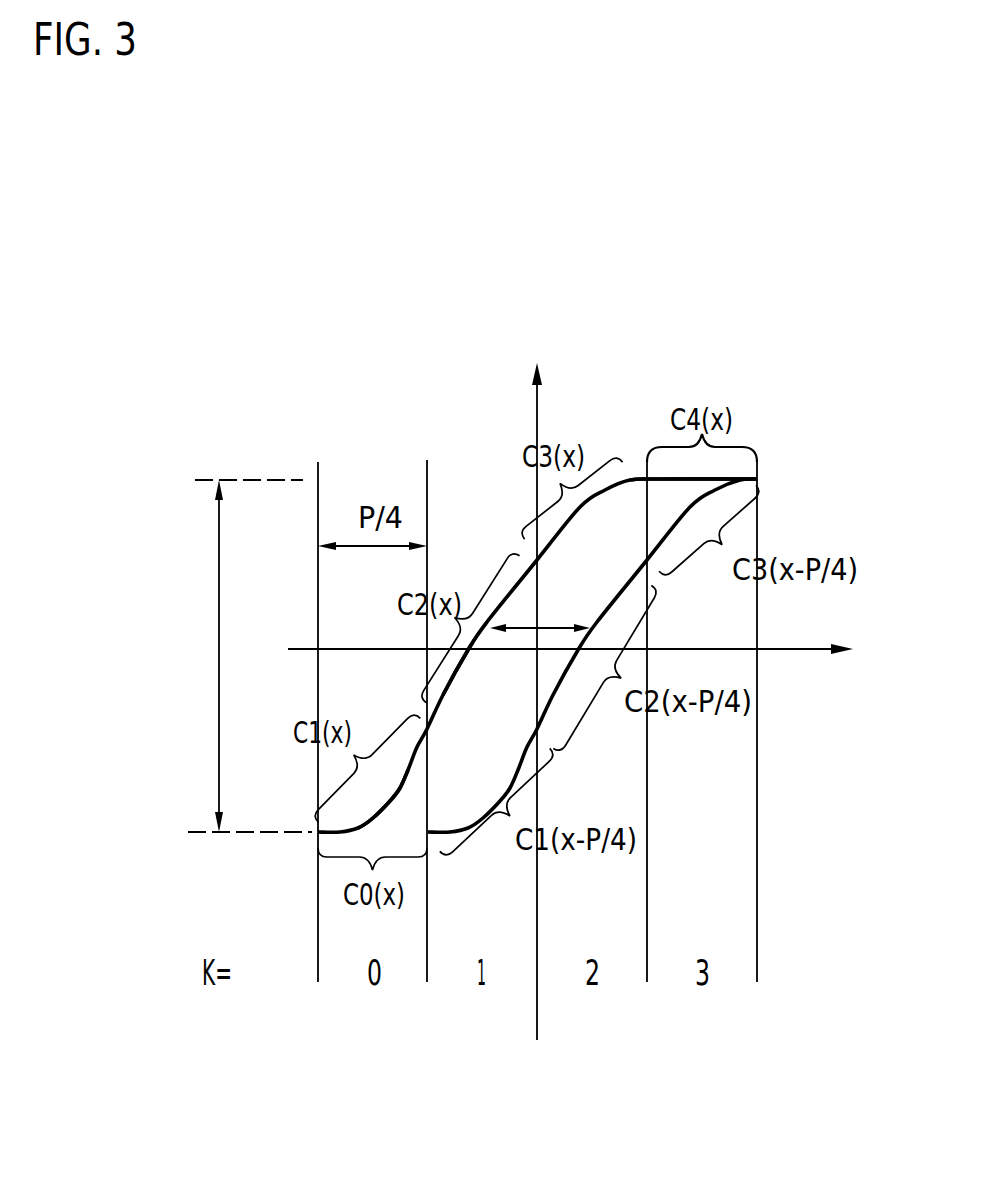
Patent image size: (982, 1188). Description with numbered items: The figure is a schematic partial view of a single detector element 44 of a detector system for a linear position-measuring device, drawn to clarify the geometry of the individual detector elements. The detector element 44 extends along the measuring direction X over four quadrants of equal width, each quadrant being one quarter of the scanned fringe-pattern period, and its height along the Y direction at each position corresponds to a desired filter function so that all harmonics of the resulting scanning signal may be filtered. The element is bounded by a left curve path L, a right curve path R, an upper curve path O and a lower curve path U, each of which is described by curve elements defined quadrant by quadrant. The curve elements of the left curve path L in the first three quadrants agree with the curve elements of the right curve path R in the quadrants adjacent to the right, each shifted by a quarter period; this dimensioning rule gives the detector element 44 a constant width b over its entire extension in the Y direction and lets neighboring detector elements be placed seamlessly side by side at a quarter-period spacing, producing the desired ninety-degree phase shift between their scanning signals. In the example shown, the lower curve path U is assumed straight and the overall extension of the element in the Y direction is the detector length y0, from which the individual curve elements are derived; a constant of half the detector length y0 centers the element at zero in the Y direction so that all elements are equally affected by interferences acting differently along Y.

The detector element 44 is at (481, 518).
The lower curve path U is at (388, 799).
The left curve path L is at (465, 665).
The upper curve path O is at (693, 497).
The width of detector element b is at (515, 610).
The right curve path R is at (567, 610).
The measuring direction X is at (591, 656).
The y-direction Y is at (550, 701).
The detector length y0 is at (197, 656).